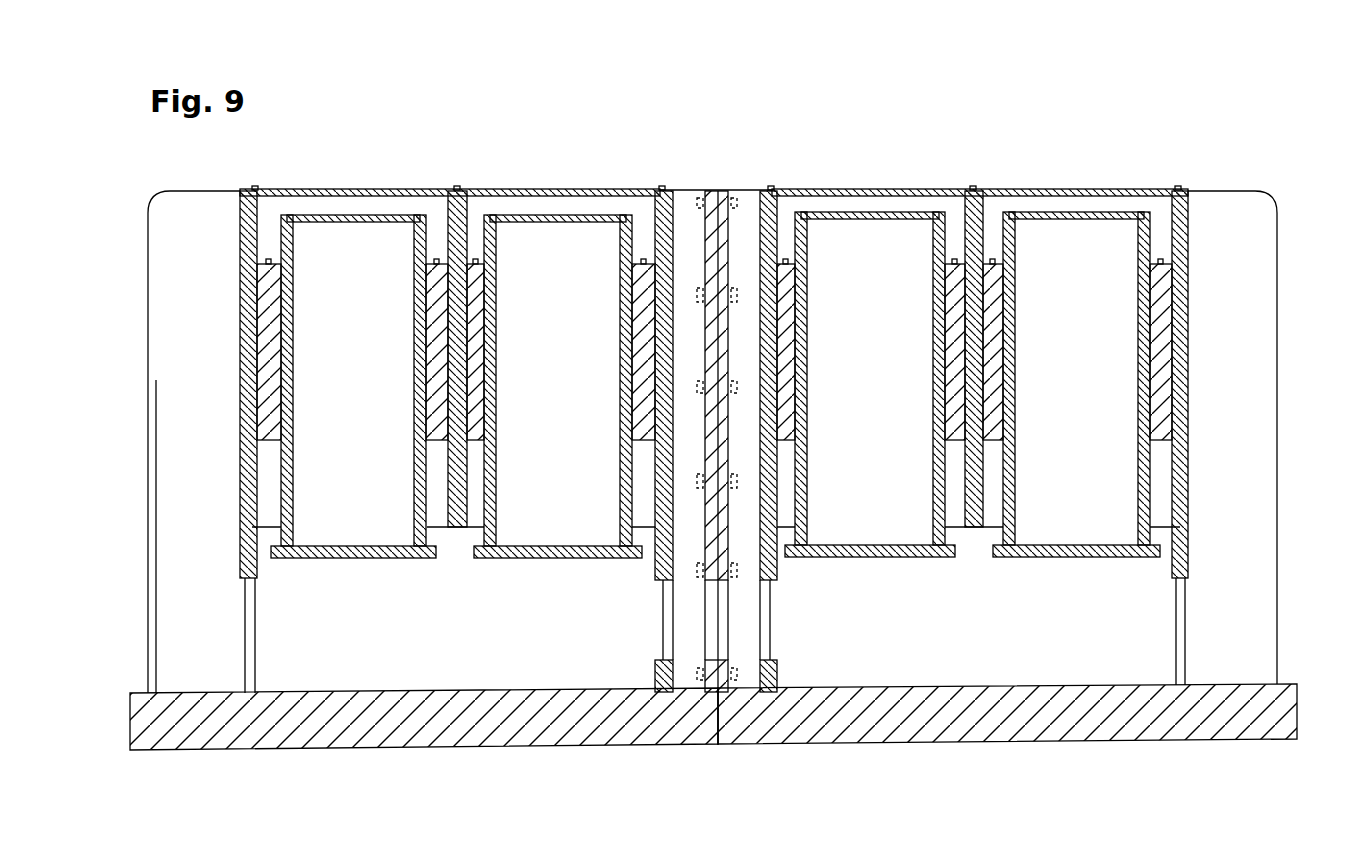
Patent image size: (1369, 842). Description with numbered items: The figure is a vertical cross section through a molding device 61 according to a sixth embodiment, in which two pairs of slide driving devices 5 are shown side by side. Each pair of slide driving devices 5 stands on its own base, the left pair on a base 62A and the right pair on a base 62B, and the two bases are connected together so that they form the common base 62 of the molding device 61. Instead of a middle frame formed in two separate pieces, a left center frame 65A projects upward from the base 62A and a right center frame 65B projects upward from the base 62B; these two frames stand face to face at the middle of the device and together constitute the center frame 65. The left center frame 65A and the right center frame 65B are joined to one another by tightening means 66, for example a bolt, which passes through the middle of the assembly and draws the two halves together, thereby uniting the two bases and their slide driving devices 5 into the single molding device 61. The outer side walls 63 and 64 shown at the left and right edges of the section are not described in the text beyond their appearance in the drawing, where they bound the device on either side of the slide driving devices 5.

The slide driving device 5 is at (353, 172).
The molding device 61 is at (1222, 115).
The base 62 is at (713, 760).
The base 62A is at (636, 742).
The base 62B is at (1007, 739).
The left side wall 63 is at (160, 456).
The right side wall 64 is at (1262, 424).
The center frame 65 is at (732, 378).
The left center frame 65A is at (686, 200).
The right center frame 65B is at (744, 200).
The tightening means 66 is at (738, 672).